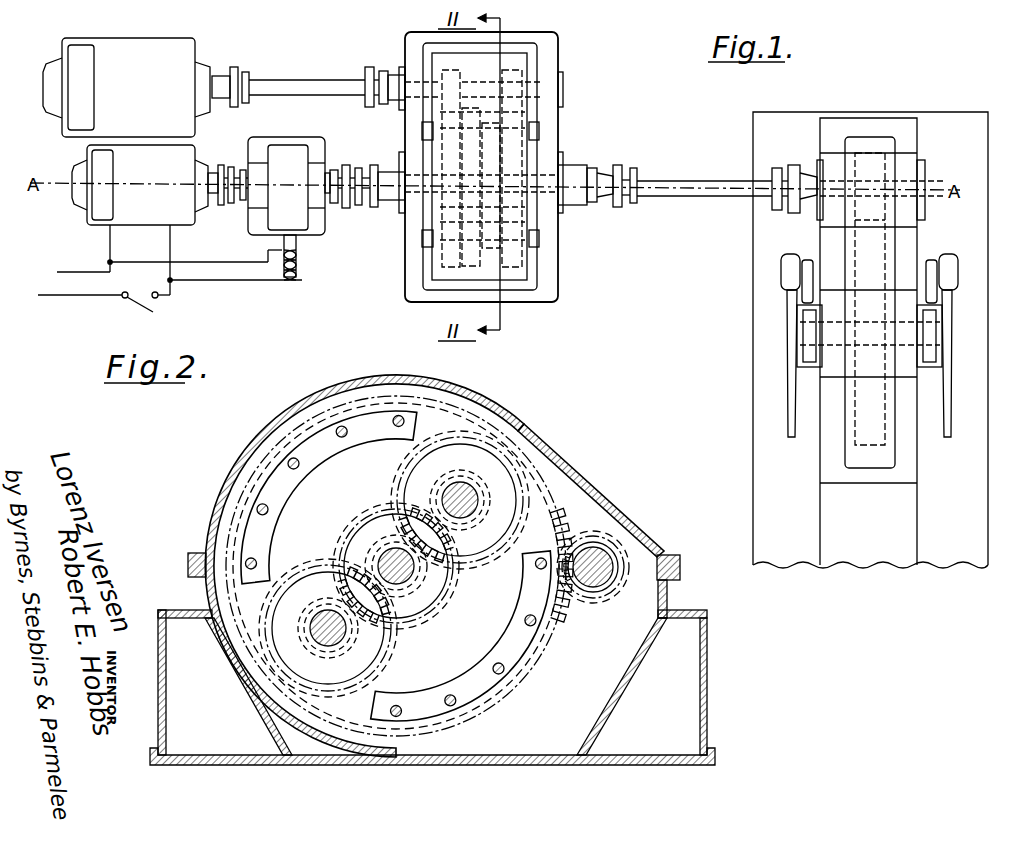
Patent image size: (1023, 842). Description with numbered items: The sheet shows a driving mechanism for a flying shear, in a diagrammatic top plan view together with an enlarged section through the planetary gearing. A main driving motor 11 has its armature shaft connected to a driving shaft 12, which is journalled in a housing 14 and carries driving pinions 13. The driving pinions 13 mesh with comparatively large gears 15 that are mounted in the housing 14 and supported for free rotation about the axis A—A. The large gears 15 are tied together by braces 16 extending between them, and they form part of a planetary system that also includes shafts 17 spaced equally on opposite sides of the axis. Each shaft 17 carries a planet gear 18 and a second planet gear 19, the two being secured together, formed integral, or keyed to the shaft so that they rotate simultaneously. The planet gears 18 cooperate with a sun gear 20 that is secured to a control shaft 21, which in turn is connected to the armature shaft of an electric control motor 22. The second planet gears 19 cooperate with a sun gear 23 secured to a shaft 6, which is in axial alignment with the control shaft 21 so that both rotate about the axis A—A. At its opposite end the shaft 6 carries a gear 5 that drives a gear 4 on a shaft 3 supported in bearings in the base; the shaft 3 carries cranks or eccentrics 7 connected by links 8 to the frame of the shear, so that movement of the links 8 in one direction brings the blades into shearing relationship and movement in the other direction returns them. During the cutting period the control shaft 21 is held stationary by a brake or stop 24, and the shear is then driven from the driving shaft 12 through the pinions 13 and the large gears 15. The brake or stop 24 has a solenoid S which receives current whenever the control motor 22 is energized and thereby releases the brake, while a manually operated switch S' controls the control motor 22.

In FIG. 1, the shaft 3 is at (810, 347).
In FIG. 1, the gear 4 is at (871, 452).
In FIG. 1, the gear 5 is at (866, 150).
In FIG. 1, the shaft 6 is at (689, 181).
In FIG. 2, the shaft 6 is at (422, 585).
In FIG. 1, the cranks or eccentrics 7 is at (810, 294).
In FIG. 1, the links 8 is at (790, 343).
In FIG. 1, the main driving motor 11 is at (150, 30).
In FIG. 1, the driving shaft 12 is at (318, 75).
In FIG. 2, the driving shaft 12 is at (611, 559).
In FIG. 1, the driving pinions 13 is at (452, 80).
In FIG. 2, the driving pinions 13 is at (579, 531).
In FIG. 1, the housing 14 is at (528, 68).
In FIG. 2, the housing 14 is at (566, 462).
In FIG. 1, the large gears 15 is at (521, 240).
In FIG. 2, the large gears 15 is at (557, 607).
In FIG. 2, the braces 16 is at (289, 482).
In FIG. 2, the shafts 17 is at (462, 497).
In FIG. 1, the planet gear 18 is at (522, 110).
In FIG. 2, the planet gear 18 is at (400, 527).
In FIG. 1, the second planet gear 19 is at (540, 128).
In FIG. 2, the second planet gear 19 is at (435, 496).
In FIG. 1, the sun gear 20 is at (470, 208).
In FIG. 2, the sun gear 20 is at (362, 555).
In FIG. 1, the control shaft 21 is at (362, 173).
In FIG. 1, the electric control motor 22 is at (148, 213).
In FIG. 1, the sun gear 23 is at (508, 212).
In FIG. 2, the sun gear 23 is at (461, 563).
In FIG. 1, the brake or stop 24 is at (306, 135).
In FIG. 1, the solenoid S is at (309, 264).
In FIG. 1, the switch S' is at (104, 311).